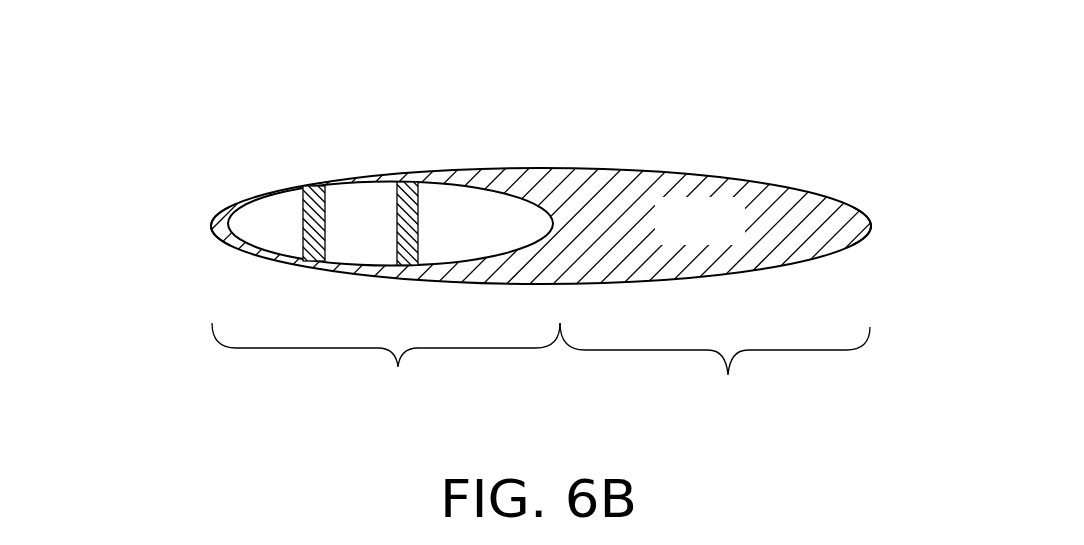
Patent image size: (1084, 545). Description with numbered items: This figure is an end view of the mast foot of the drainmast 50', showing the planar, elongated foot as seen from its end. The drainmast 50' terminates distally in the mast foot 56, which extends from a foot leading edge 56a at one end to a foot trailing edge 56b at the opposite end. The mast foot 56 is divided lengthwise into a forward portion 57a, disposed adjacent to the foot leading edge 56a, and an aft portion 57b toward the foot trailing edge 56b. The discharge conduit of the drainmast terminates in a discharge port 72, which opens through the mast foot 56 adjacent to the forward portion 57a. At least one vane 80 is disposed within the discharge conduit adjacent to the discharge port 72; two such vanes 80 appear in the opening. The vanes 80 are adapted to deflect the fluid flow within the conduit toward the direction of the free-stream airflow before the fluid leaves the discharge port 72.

The drainmast 50' is at (541, 182).
The mast foot 56 is at (717, 236).
The foot leading edge 56a is at (203, 237).
The foot trailing edge 56b is at (873, 242).
The forward portion 57a is at (398, 372).
The aft portion 57b is at (728, 378).
The discharge port 72 is at (478, 233).
The vane 80 is at (327, 228).